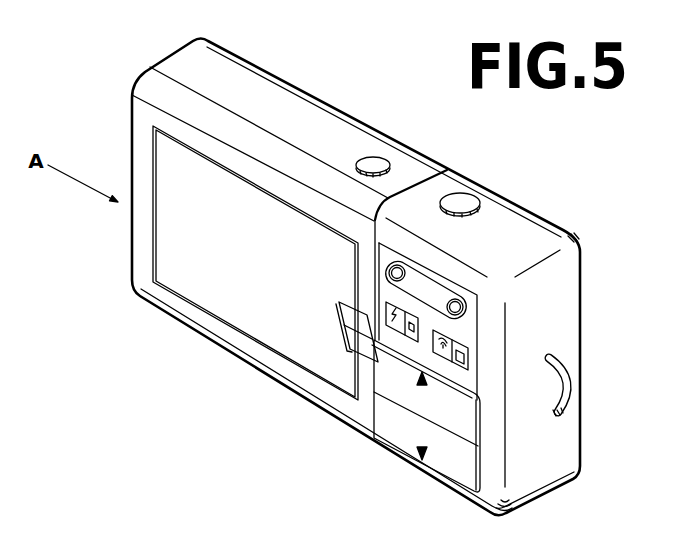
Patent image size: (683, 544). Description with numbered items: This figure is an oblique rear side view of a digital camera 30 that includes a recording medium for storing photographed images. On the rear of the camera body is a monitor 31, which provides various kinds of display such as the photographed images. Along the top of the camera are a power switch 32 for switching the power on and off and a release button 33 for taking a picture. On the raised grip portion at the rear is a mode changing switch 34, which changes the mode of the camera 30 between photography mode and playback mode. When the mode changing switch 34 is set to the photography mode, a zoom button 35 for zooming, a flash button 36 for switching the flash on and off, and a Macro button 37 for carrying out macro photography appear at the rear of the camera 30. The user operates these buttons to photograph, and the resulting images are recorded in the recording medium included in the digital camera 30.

The digital camera 30 is at (313, 97).
The monitor 31 is at (187, 250).
The power switch 32 is at (376, 163).
The release button 33 is at (462, 200).
The mode changing switch 34 is at (382, 417).
The zoom button 35 is at (430, 290).
The flash button 36 is at (408, 332).
The Macro button 37 is at (458, 348).